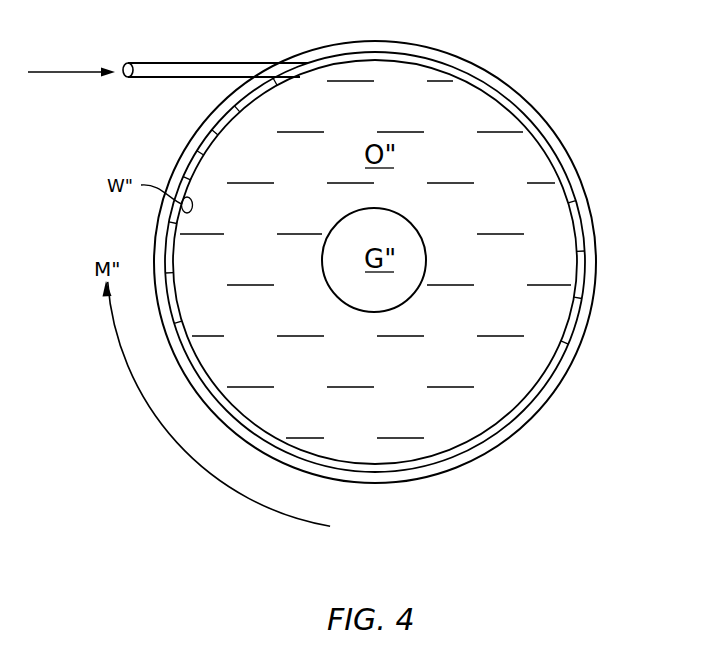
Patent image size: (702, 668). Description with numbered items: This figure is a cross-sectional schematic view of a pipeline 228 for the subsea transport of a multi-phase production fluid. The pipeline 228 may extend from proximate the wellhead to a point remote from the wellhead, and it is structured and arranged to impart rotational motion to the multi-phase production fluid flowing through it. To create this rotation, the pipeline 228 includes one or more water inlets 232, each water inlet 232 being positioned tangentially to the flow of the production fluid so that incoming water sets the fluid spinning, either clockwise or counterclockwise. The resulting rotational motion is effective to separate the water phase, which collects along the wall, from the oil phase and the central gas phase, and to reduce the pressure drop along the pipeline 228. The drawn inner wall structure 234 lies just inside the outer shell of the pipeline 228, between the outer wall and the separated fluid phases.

The pipeline 228 is at (550, 125).
The water inlet 232 is at (201, 79).
The inner wall / ring 234 is at (576, 314).